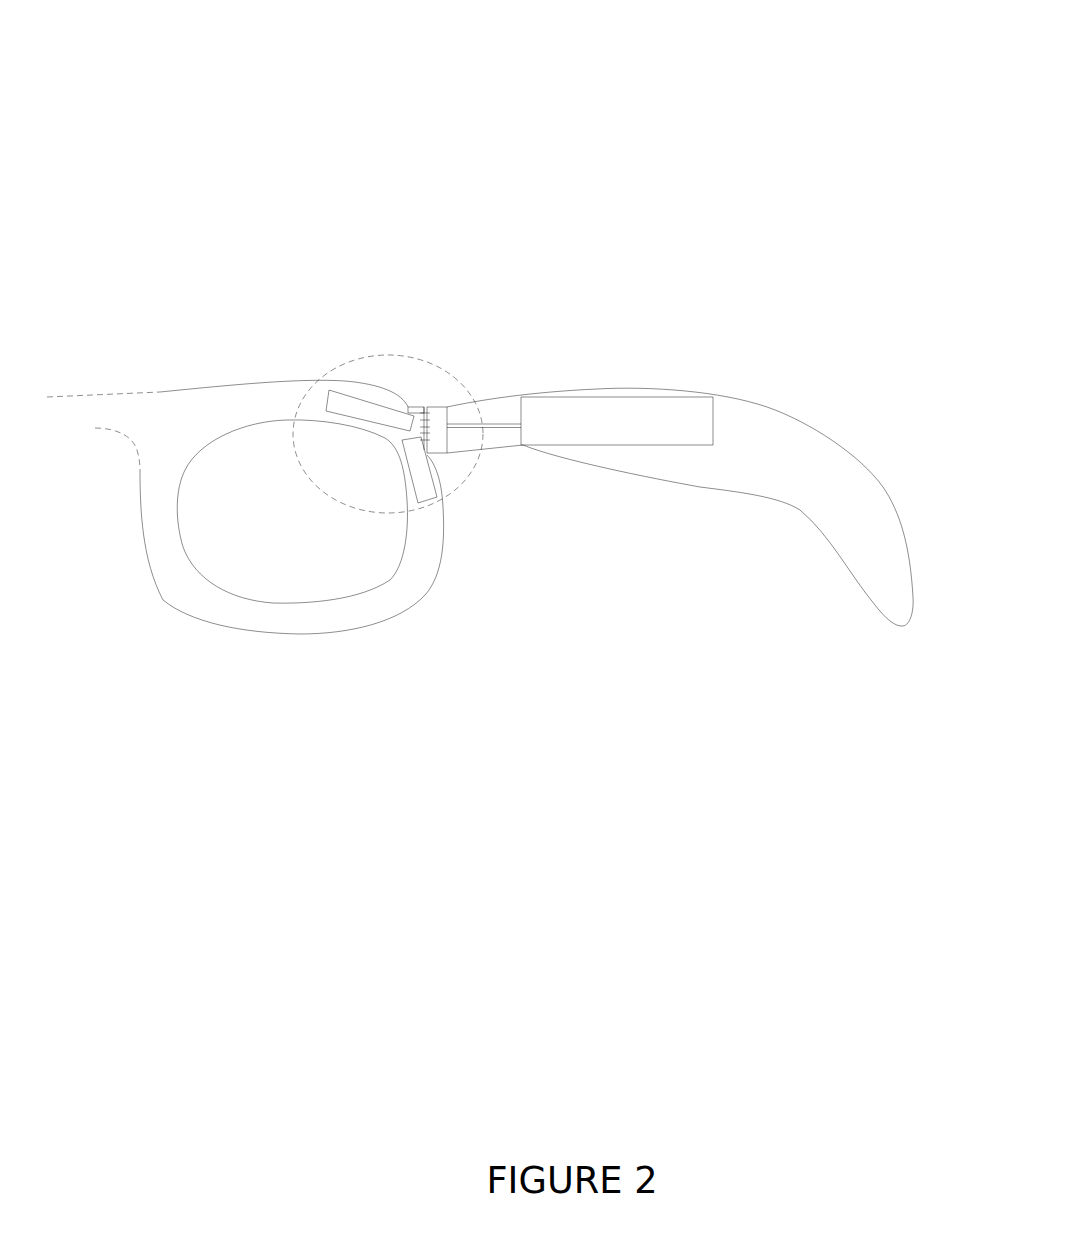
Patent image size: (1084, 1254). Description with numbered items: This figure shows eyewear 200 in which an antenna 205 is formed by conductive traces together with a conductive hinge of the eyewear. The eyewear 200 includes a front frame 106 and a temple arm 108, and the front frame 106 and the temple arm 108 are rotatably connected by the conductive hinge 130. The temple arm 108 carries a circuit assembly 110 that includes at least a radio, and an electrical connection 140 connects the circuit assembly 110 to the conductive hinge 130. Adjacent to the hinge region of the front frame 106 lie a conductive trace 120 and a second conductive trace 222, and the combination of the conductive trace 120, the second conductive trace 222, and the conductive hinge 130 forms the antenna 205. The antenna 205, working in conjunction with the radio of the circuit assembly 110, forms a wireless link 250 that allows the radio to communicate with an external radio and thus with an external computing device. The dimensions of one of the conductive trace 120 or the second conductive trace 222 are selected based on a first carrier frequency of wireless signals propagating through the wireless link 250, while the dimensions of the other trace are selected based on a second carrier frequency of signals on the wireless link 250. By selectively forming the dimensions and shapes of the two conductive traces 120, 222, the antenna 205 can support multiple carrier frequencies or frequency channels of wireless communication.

The front frame 106 is at (207, 416).
The temple arm 108 is at (802, 468).
The circuit assembly 110 is at (633, 411).
The conductive trace 120 is at (375, 414).
The conductive hinge 130 is at (438, 423).
The electrical connection 140 is at (497, 421).
The eyewear 200 is at (302, 682).
The antenna 205 is at (452, 462).
The second conductive trace 222 is at (427, 504).
The wireless link 250 is at (334, 438).